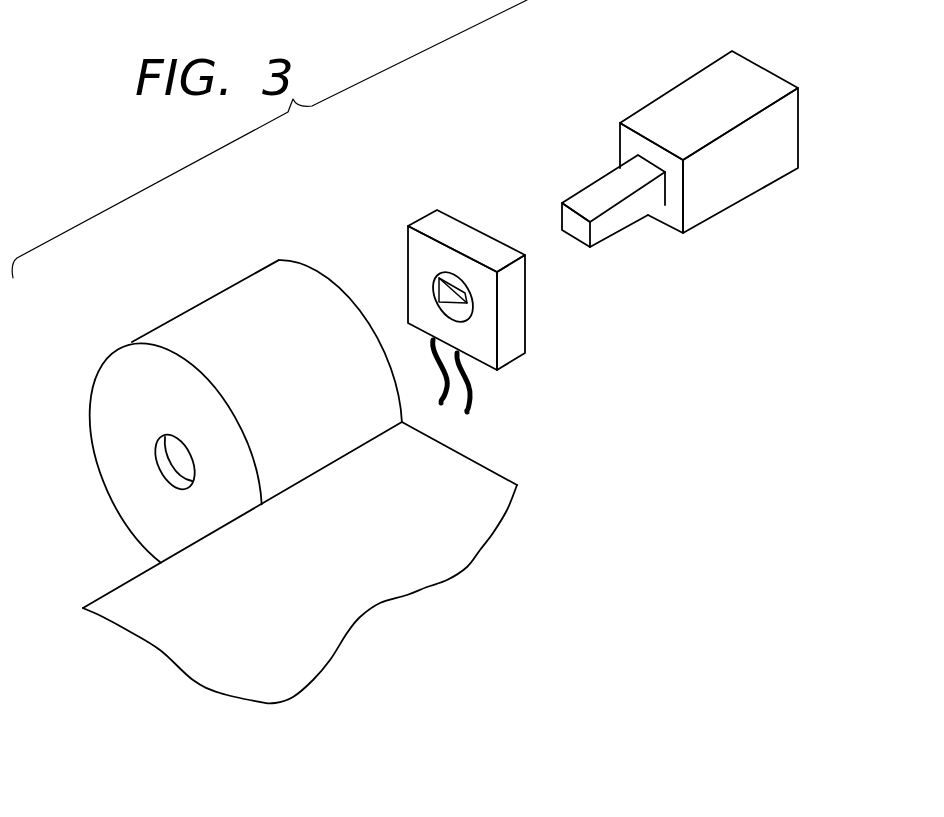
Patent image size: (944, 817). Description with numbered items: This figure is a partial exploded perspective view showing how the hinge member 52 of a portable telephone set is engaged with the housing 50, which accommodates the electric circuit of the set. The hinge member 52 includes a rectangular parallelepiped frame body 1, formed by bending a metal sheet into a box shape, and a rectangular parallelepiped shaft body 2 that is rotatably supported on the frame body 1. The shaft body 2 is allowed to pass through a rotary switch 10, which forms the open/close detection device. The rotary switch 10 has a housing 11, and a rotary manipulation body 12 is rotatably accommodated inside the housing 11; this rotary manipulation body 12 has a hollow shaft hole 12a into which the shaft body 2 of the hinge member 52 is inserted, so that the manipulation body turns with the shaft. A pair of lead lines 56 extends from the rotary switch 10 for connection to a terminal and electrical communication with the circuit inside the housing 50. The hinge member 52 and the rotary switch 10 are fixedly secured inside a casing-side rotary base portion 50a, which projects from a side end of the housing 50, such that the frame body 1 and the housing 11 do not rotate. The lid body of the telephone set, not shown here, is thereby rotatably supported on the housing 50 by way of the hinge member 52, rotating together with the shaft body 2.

The frame body 1 is at (738, 180).
The shaft body 2 is at (602, 192).
The hinge member 52 is at (674, 130).
The rotary switch 10 is at (478, 282).
The housing 11 is at (508, 297).
The rotary manipulation body 12 is at (432, 283).
The hollow shaft hole 12a is at (457, 305).
The lead lines 56 is at (457, 388).
The housing 50 is at (437, 550).
The casing-side rotary base portion 50a is at (208, 325).